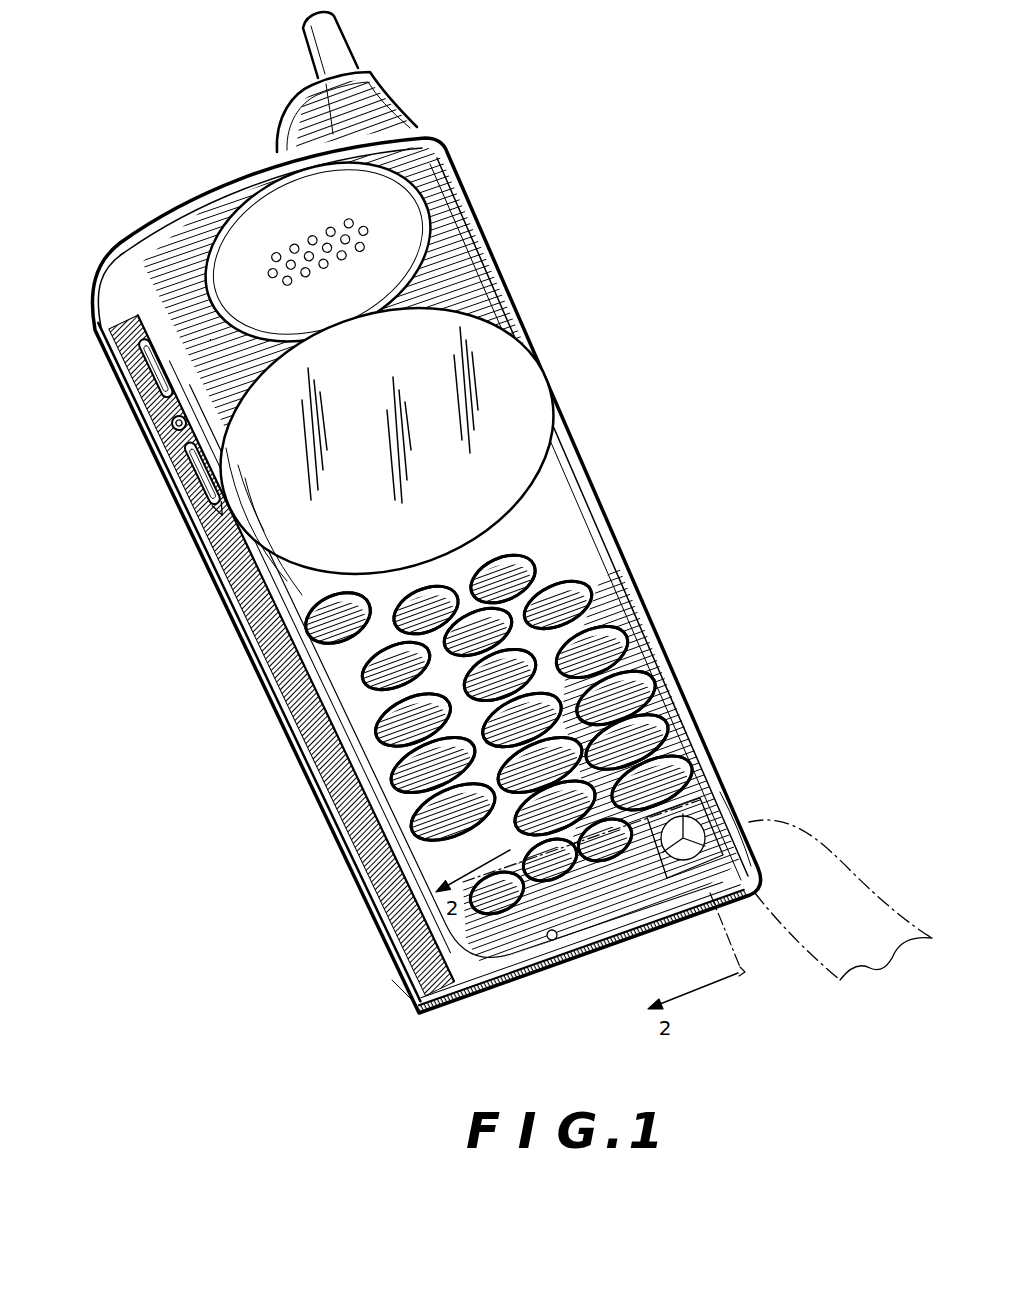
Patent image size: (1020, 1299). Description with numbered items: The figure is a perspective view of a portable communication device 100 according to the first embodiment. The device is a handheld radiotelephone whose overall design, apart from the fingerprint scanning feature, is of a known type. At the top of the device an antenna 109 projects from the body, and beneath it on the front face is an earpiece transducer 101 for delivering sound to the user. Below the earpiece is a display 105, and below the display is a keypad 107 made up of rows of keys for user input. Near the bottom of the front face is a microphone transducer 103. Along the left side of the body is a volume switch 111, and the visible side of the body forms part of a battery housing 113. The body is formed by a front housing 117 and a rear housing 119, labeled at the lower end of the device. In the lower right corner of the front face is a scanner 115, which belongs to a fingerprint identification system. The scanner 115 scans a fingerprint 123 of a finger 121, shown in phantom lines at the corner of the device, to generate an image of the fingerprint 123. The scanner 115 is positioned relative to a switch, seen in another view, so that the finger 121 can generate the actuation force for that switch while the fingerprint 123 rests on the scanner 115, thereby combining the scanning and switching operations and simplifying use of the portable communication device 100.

The portable communication device 100 is at (226, 935).
The earpiece transducer 101 is at (400, 210).
The microphone transducer 103 is at (555, 941).
The display 105 is at (503, 392).
The keypad 107 is at (610, 647).
The antenna 109 is at (333, 44).
The volume switch 111 is at (197, 467).
The battery housing 113 is at (112, 377).
The scanner 115 is at (670, 872).
The front housing 117 is at (436, 1004).
The rear housing 119 is at (410, 999).
The finger 121 is at (830, 882).
The fingerprint 123 is at (687, 818).